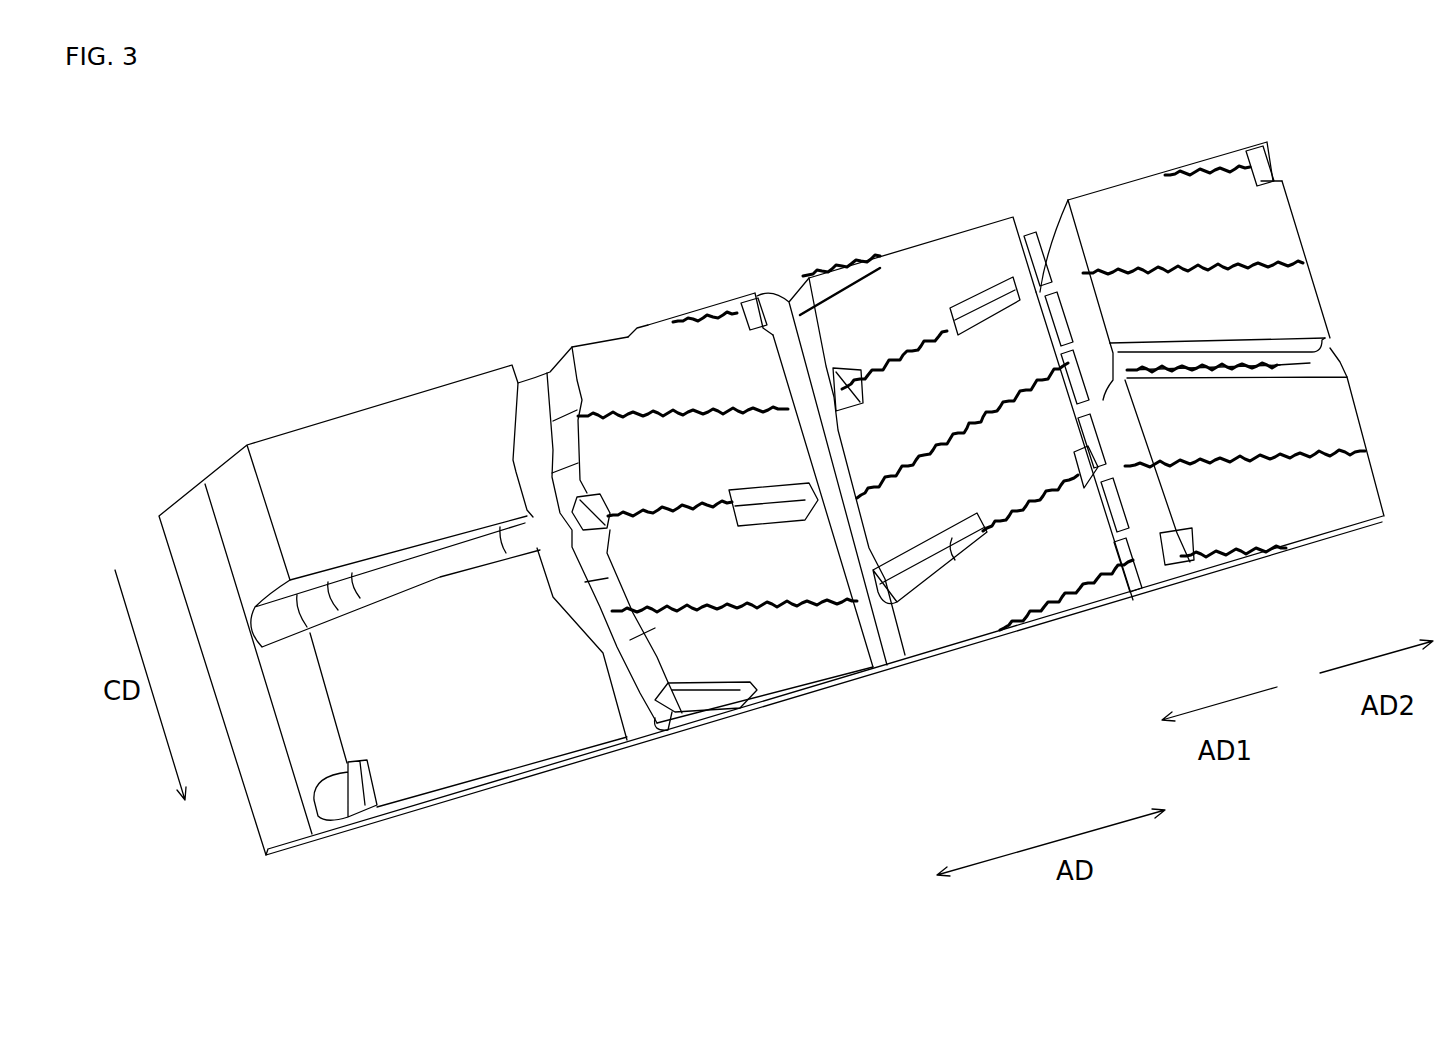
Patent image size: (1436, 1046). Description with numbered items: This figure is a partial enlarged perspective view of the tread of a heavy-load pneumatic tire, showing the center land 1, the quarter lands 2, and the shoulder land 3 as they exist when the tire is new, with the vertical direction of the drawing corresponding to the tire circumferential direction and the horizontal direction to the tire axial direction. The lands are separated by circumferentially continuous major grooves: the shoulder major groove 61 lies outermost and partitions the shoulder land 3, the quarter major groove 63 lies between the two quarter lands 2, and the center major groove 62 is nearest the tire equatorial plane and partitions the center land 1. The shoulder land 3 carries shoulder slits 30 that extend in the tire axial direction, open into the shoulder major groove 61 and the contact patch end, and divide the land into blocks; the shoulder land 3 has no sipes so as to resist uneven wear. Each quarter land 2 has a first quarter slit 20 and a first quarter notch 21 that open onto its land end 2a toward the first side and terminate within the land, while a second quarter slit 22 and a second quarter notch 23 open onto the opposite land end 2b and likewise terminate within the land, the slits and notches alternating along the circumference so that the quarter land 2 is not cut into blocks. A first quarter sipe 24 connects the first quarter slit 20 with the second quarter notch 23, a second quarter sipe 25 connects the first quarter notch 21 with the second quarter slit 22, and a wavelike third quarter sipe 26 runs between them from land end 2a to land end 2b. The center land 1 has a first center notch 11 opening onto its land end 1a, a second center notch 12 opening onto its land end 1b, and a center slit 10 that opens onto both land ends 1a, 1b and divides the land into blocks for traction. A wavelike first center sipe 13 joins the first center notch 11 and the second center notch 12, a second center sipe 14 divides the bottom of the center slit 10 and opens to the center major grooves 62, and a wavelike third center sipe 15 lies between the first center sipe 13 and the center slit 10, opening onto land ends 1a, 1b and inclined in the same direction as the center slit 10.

The center land 1 is at (1119, 199).
The land end 1a is at (1062, 200).
The land end 1b is at (1299, 227).
The quarter land 2 is at (651, 336).
The land end 2a is at (550, 363).
The land end 2b is at (762, 296).
The shoulder land 3 is at (362, 421).
The center slit 10 is at (1198, 343).
The first center notch 11 is at (1181, 535).
The second center notch 12 is at (1282, 181).
The first center sipe 13 is at (1230, 174).
The second center sipe 14 is at (1286, 372).
The third center sipe 15 is at (1265, 266).
The first quarter slit 20 is at (717, 688).
The first quarter notch 21 is at (595, 496).
The second quarter slit 22 is at (779, 492).
The second quarter notch 23 is at (1075, 451).
The first quarter sipe 24 is at (709, 324).
The second quarter sipe 25 is at (643, 513).
The third quarter sipe 26 is at (680, 414).
The shoulder slit 30 is at (391, 564).
The shoulder major groove 61 is at (516, 343).
The center major groove 62 is at (1024, 201).
The quarter major groove 63 is at (769, 278).